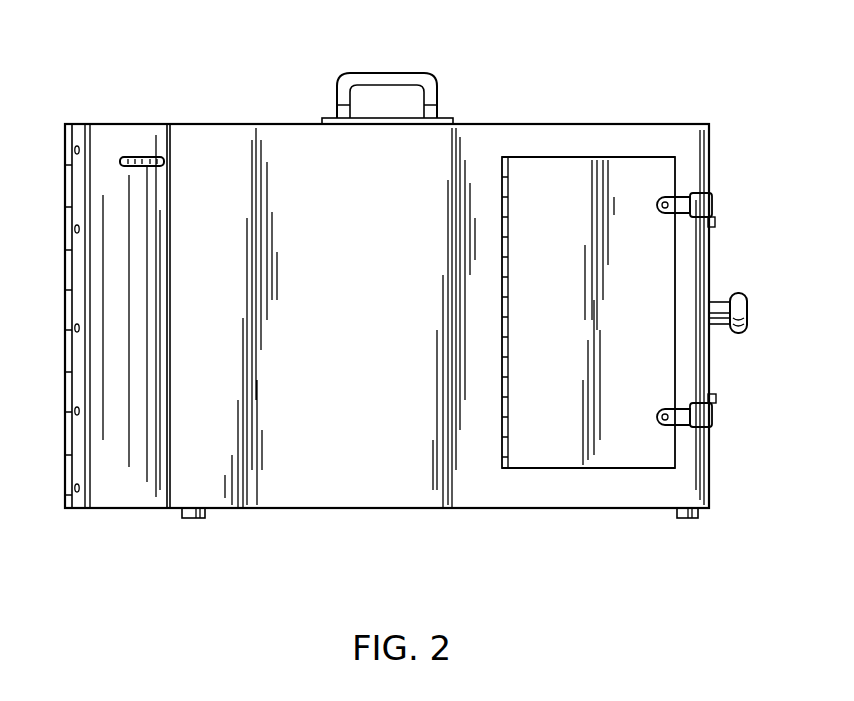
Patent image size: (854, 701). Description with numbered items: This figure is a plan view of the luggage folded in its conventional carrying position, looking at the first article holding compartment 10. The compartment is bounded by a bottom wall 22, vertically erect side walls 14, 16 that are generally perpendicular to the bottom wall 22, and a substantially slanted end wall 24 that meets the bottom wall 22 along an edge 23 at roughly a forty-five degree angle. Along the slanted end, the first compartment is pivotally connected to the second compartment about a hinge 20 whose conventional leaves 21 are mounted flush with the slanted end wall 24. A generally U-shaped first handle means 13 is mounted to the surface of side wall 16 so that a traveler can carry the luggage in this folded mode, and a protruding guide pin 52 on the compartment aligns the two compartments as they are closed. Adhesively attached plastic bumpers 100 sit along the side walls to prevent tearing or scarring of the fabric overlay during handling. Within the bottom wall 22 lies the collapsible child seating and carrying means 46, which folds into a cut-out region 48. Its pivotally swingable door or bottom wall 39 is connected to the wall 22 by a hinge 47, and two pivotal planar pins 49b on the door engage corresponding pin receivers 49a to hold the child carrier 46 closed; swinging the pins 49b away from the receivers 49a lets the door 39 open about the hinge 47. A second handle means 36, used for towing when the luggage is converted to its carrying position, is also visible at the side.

The first article holding compartment 10 is at (370, 309).
The first handle means 13 is at (412, 77).
The side wall 14 is at (368, 509).
The side wall 16 is at (287, 124).
The hinge 20 is at (65, 272).
The hinge leaf 21 is at (83, 134).
The bottom wall 22 is at (295, 482).
The edge 23 is at (171, 268).
The slanted end wall 24 is at (120, 496).
The second handle means 36 is at (741, 297).
The pivotally swingable door or bottom wall 39 is at (568, 455).
The collapsible child seating and carrying means 46 is at (553, 339).
The hinge 47 is at (502, 313).
The cut-out region 48 is at (575, 157).
The pin receiver 49a is at (706, 206).
The pivotal planar pin 49b is at (673, 202).
The guide pin 52 is at (147, 157).
The plastic bumper 100 is at (196, 518).